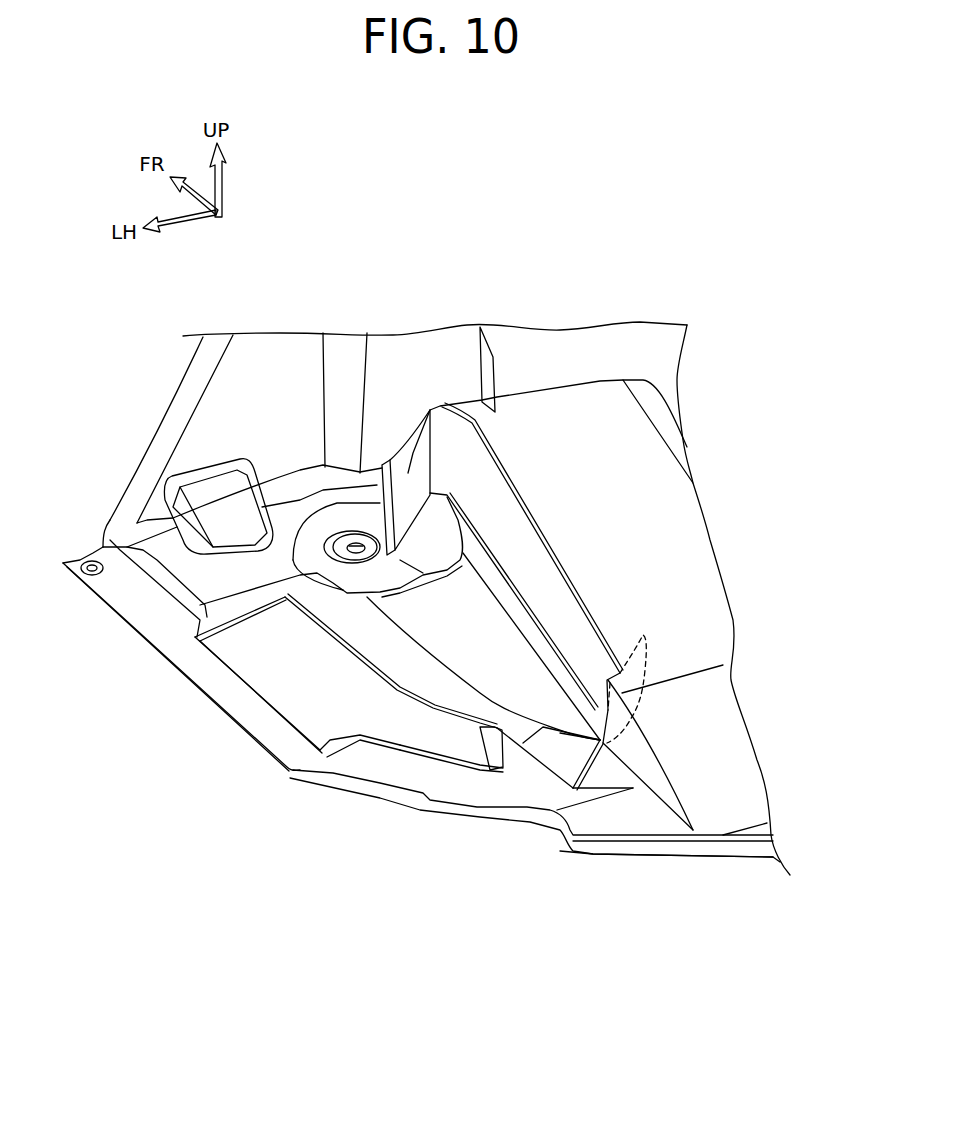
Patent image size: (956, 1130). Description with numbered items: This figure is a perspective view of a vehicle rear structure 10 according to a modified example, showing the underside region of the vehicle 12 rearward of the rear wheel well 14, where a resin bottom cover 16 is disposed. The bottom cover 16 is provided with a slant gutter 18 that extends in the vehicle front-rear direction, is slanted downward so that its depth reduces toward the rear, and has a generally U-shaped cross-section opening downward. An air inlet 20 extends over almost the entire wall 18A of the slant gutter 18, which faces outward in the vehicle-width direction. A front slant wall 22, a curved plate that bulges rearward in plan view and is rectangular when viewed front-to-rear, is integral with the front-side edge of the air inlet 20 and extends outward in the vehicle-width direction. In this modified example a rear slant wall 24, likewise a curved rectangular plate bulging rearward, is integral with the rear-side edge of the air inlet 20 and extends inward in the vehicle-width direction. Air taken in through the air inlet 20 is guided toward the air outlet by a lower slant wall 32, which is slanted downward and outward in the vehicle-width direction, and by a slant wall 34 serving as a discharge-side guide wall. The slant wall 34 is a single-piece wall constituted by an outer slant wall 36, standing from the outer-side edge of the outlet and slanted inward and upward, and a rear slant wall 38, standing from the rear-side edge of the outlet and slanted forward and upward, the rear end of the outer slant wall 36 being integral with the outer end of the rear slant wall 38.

The vehicle rear structure 10 is at (393, 808).
The vehicle 12 is at (747, 860).
The rear wheel well 14 is at (160, 425).
The bottom cover 16 is at (158, 628).
The slant gutter 18 is at (642, 580).
The wall of the slant gutter 18A is at (650, 770).
The air inlet 20 is at (533, 540).
The front slant wall 22 is at (430, 410).
The rear slant wall 24 is at (647, 667).
The lower slant wall 32 is at (360, 640).
The slant wall 34 is at (445, 736).
The outer slant wall 36 is at (273, 673).
The rear slant wall 38 is at (530, 780).